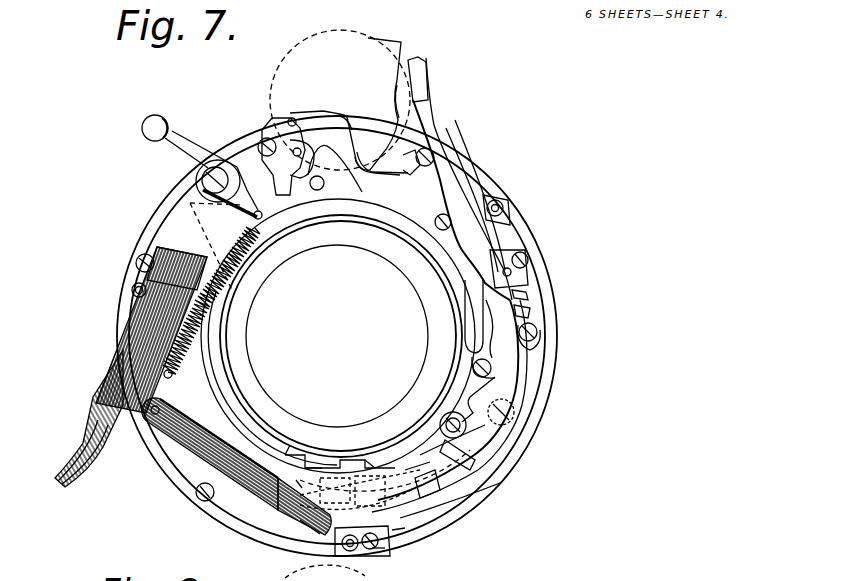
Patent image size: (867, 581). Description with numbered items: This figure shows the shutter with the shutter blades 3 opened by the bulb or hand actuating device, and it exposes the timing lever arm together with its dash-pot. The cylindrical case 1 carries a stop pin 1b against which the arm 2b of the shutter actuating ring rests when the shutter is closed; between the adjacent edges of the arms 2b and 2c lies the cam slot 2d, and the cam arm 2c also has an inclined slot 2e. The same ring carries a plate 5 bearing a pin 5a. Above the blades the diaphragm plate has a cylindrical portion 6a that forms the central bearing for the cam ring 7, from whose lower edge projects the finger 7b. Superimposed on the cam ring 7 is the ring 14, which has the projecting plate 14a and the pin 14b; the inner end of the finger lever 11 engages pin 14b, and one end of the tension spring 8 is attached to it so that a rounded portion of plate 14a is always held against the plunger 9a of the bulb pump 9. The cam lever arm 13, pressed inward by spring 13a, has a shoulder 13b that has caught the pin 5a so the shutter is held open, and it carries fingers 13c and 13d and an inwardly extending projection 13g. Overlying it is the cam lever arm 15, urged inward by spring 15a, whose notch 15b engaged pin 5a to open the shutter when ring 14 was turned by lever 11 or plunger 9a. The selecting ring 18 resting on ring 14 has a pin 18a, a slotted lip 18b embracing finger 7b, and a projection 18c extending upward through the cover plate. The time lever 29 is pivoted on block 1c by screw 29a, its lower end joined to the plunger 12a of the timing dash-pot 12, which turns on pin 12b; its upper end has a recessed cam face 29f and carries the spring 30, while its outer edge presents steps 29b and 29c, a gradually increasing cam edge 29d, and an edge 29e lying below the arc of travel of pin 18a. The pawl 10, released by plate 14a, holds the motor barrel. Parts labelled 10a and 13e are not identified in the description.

The cylindrical case 1 is at (127, 262).
The stop pin 1b is at (291, 117).
The block 1c is at (422, 207).
The arm 2b is at (375, 62).
The cam arm 2c is at (427, 76).
The cam slot 2d is at (402, 100).
The inclined slot 2e is at (392, 166).
The shutter blades 3 is at (330, 157).
The plate 5 is at (352, 472).
The pin 5a is at (430, 500).
The cylindrical portion 6a is at (233, 380).
The cam ring 7 is at (455, 200).
The finger 7b is at (296, 447).
The tension spring 8 is at (200, 290).
The bulb pump 9 is at (112, 365).
The plunger 9a is at (183, 236).
The pawl 10 is at (266, 125).
The cam lug 10a is at (272, 173).
The finger lever 11 is at (141, 130).
The timing dash-pot 12 is at (190, 470).
The plunger 12a is at (268, 512).
The pin 12b is at (150, 425).
The cam lever arm 13 is at (480, 433).
The spring 13a is at (530, 345).
The shoulder 13b is at (420, 480).
The finger 13c is at (378, 549).
The finger 13d is at (400, 540).
The lever portion 13e is at (300, 556).
The projection 13g is at (488, 455).
The ring 14 is at (193, 376).
The projecting plate 14a is at (240, 198).
The pin 14b is at (254, 213).
The cam lever arm 15 is at (473, 473).
The spring 15a is at (450, 378).
The notch or shoulder 15b is at (283, 503).
The selecting ring 18 is at (233, 412).
The pin 18a is at (522, 275).
The lip 18b is at (322, 460).
The projection 18c is at (370, 462).
The time lever 29 is at (523, 297).
The screw 29a is at (448, 172).
The step 29b is at (530, 284).
The step 29c is at (524, 310).
The cam edge 29d is at (513, 457).
The edge 29e is at (480, 240).
The recessed cam face 29f is at (414, 148).
The spring 30 is at (368, 175).